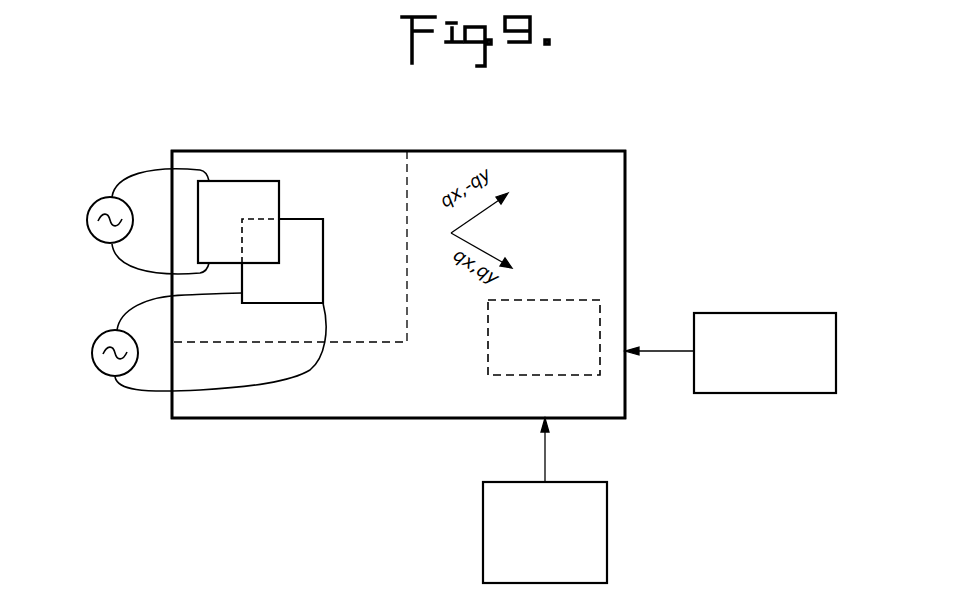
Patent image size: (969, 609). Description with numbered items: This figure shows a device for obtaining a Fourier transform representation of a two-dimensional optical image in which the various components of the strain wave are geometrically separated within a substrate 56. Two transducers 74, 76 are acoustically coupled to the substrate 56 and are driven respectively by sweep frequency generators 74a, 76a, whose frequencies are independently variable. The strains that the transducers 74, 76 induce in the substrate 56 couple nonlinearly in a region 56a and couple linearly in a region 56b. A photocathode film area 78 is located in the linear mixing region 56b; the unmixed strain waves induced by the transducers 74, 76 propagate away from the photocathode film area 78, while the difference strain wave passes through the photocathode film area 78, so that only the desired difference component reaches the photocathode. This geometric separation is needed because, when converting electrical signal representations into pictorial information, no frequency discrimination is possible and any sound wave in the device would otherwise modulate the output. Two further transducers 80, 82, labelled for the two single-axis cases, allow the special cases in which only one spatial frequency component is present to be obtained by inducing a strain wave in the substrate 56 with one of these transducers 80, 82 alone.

The substrate 56 is at (386, 409).
The region 56a is at (340, 158).
The region 56b is at (608, 189).
The transducer 74 is at (241, 181).
The sweep frequency generator 74a is at (100, 197).
The transducer 76 is at (310, 219).
The sweep frequency generator 76a is at (107, 330).
The photocathode film area 78 is at (578, 298).
The transducer 80 is at (607, 514).
The transducer 82 is at (752, 393).